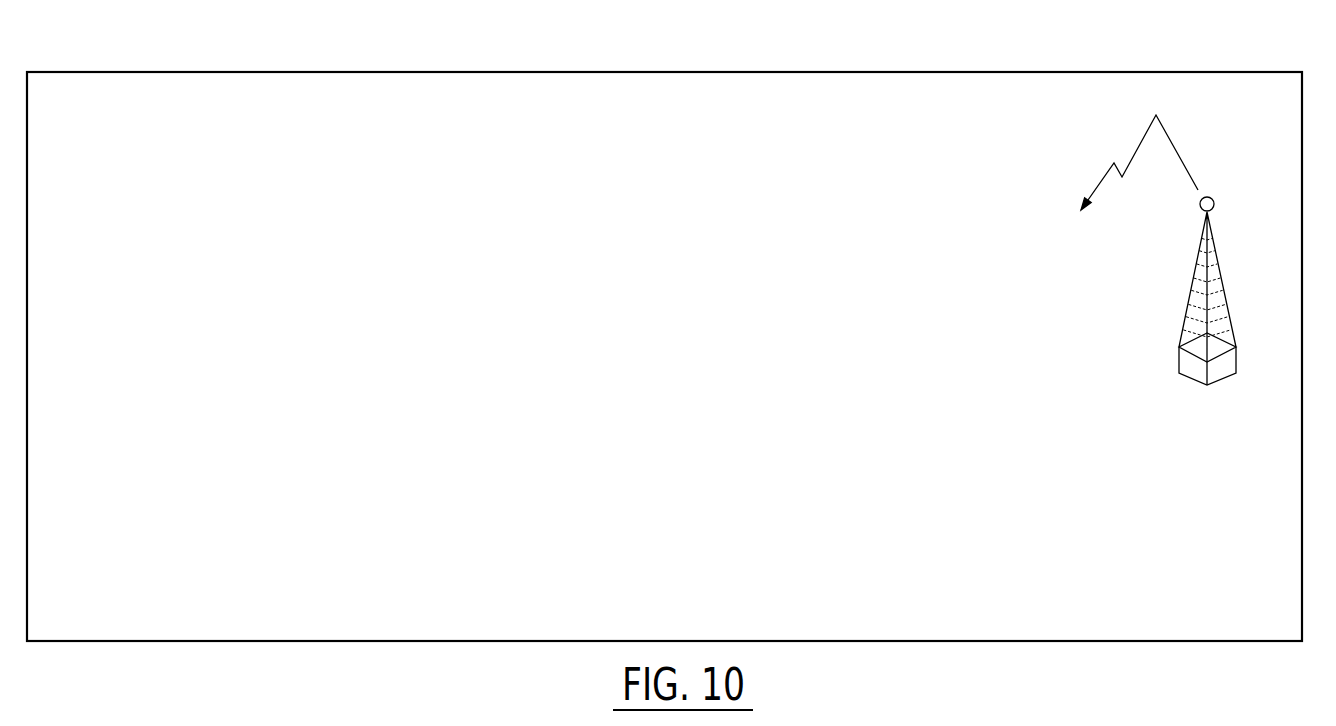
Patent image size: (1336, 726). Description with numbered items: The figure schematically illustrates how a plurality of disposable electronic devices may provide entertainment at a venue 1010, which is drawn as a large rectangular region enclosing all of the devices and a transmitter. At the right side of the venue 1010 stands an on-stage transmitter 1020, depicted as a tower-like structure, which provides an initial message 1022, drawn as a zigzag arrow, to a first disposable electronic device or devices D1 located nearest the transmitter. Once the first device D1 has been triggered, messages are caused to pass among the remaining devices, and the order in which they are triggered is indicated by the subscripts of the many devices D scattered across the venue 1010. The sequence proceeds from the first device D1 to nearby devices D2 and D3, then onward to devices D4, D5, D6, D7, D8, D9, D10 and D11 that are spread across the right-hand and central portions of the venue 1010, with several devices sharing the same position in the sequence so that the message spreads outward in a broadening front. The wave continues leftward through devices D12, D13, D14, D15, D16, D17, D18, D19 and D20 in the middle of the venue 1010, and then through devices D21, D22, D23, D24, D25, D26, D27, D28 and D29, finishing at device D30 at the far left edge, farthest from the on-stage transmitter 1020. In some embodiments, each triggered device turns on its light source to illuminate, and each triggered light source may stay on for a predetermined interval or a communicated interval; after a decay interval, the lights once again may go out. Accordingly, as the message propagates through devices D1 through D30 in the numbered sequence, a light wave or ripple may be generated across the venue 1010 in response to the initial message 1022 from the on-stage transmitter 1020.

The venue 1010 is at (193, 72).
The on-stage transmitter 1020 is at (1190, 288).
The initial message 1022 is at (1136, 145).
The first disposable electronic device D1 is at (1067, 224).
The disposable electronic device D2 is at (1022, 164).
The disposable electronic device D3 is at (968, 221).
The disposable electronic device D4 is at (968, 304).
The disposable electronic device D5 is at (940, 386).
The disposable electronic device D6 is at (902, 415).
The disposable electronic device D7 is at (870, 417).
The disposable electronic device D8 is at (865, 427).
The disposable electronic device D9 is at (861, 429).
The disposable electronic device D10 is at (865, 410).
The disposable electronic device D11 is at (814, 296).
The disposable electronic device D12 is at (471, 214).
The disposable electronic device D13 is at (506, 274).
The disposable electronic device D14 is at (461, 319).
The disposable electronic device D15 is at (507, 357).
The disposable electronic device D16 is at (447, 410).
The disposable electronic device D17 is at (509, 434).
The disposable electronic device D18 is at (531, 472).
The disposable electronic device D19 is at (497, 516).
The disposable electronic device D20 is at (459, 569).
The disposable electronic device D21 is at (333, 533).
The disposable electronic device D22 is at (301, 517).
The disposable electronic device D23 is at (330, 413).
The disposable electronic device D24 is at (300, 404).
The disposable electronic device D25 is at (325, 318).
The disposable electronic device D26 is at (324, 263).
The disposable electronic device D27 is at (262, 300).
The disposable electronic device D28 is at (237, 289).
The disposable electronic device D29 is at (232, 293).
The disposable electronic device D30 is at (149, 484).